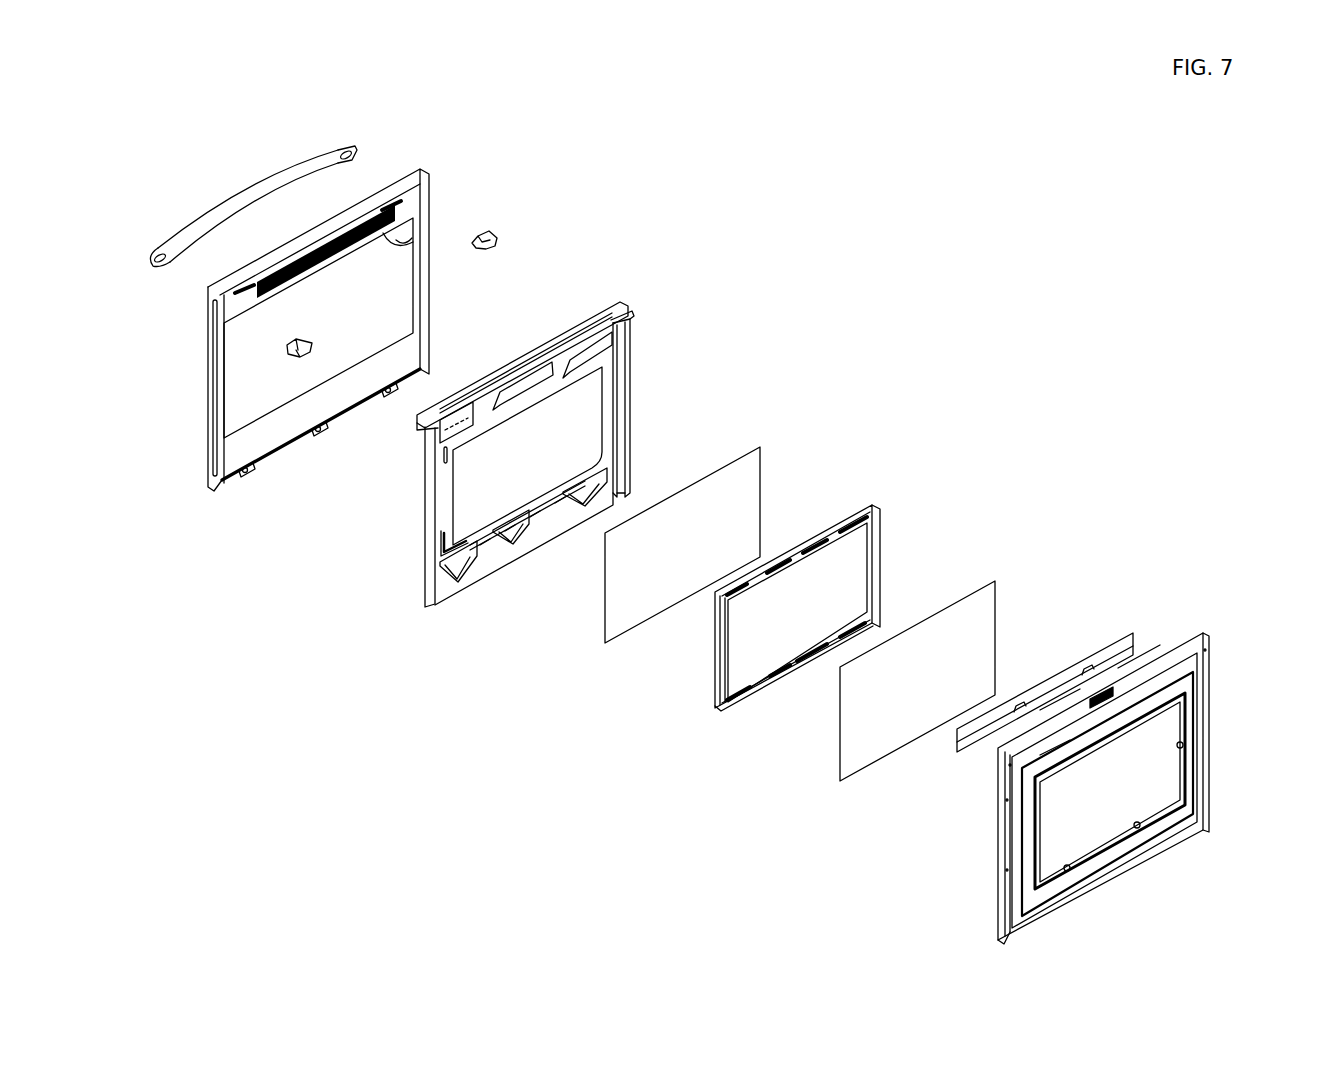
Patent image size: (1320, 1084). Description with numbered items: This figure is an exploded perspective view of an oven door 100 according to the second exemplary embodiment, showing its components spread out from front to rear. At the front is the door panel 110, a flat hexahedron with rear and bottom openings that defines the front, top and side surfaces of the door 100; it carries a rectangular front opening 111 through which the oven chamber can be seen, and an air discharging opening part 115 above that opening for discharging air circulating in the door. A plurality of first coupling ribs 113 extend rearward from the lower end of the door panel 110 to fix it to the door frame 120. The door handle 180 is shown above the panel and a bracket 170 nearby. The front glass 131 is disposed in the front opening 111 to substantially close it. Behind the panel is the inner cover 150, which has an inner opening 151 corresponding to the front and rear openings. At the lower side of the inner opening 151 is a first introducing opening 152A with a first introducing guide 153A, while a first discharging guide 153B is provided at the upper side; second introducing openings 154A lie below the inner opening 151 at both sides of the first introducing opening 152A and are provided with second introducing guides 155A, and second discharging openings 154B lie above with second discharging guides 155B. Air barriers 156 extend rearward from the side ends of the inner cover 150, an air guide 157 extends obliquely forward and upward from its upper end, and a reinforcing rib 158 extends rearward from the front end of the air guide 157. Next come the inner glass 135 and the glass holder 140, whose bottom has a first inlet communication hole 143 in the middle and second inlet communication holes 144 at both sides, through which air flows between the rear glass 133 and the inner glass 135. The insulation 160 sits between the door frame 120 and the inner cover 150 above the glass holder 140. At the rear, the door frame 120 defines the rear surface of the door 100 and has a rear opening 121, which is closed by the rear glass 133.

The door 100 is at (784, 230).
The door panel 110 is at (347, 323).
The front opening 111 is at (396, 238).
The first coupling ribs 113 is at (247, 478).
The air discharging opening part 115 is at (303, 256).
The door frame 120 is at (1127, 773).
The rear opening 121 is at (1168, 721).
The front glass 131 is at (400, 278).
The rear glass 133 is at (930, 615).
The inner glass 135 is at (698, 480).
The glass holder 140 is at (830, 612).
The first inlet communication hole 143 is at (792, 671).
The second inlet communication holes 144 is at (742, 699).
The inner cover 150 is at (523, 447).
The inner opening 151 is at (630, 418).
The first introducing opening 152A is at (531, 525).
The first introducing guide 153A is at (537, 527).
The first discharging guide 153B is at (530, 390).
The second introducing openings 154A is at (465, 546).
The second discharging openings 154B is at (445, 430).
The second introducing guides 155A is at (466, 566).
The second discharging guides 155B is at (475, 440).
The air barriers 156 is at (627, 358).
The air guide 157 is at (618, 321).
The reinforcing rib 158 is at (620, 302).
The insulation 160 is at (1067, 663).
The bracket 170 is at (494, 228).
The door handle 180 is at (193, 220).